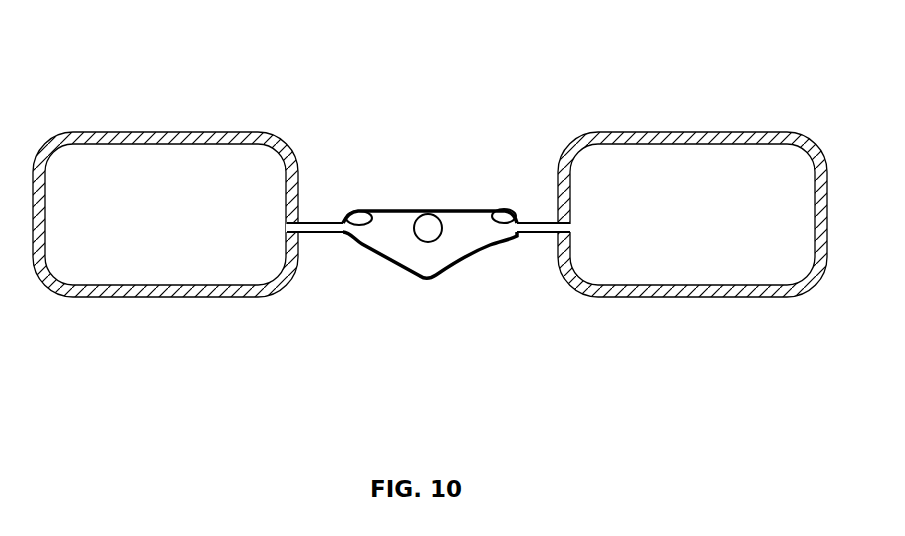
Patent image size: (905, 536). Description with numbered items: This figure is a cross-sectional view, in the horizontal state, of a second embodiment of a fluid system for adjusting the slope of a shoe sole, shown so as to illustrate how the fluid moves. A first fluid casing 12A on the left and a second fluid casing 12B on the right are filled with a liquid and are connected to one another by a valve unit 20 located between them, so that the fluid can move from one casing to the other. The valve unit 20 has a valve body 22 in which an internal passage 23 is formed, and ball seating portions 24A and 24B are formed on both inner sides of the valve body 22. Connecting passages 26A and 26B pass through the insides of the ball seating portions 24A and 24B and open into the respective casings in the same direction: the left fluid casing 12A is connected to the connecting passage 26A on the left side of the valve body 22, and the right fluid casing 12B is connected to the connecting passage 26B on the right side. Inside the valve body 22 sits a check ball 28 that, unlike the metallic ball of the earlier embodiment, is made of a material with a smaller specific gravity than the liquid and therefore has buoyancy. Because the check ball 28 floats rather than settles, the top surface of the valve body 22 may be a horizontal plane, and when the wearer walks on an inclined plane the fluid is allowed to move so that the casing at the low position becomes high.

The first fluid casing 12A is at (163, 133).
The second fluid casing 12B is at (701, 133).
The valve unit 20 is at (428, 211).
The valve body 22 is at (399, 268).
The internal passage 23 is at (473, 224).
The ball seating portion 24A is at (368, 212).
The ball seating portion 24B is at (494, 211).
The connecting passage 26A is at (306, 234).
The connecting passage 26B is at (541, 234).
The check ball 28 is at (430, 230).